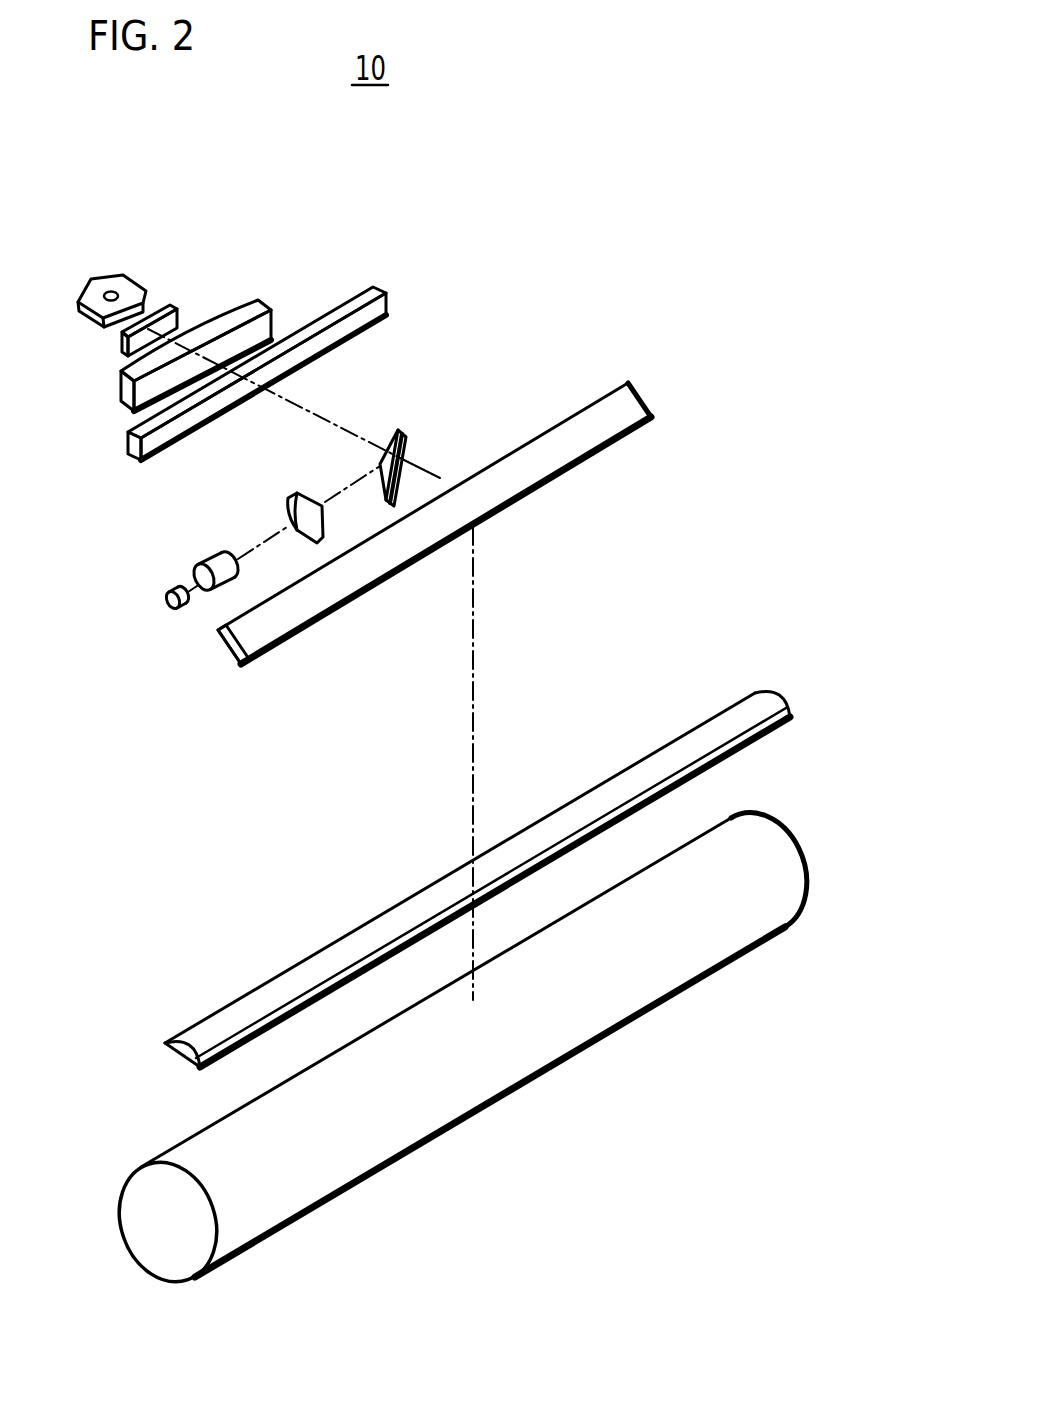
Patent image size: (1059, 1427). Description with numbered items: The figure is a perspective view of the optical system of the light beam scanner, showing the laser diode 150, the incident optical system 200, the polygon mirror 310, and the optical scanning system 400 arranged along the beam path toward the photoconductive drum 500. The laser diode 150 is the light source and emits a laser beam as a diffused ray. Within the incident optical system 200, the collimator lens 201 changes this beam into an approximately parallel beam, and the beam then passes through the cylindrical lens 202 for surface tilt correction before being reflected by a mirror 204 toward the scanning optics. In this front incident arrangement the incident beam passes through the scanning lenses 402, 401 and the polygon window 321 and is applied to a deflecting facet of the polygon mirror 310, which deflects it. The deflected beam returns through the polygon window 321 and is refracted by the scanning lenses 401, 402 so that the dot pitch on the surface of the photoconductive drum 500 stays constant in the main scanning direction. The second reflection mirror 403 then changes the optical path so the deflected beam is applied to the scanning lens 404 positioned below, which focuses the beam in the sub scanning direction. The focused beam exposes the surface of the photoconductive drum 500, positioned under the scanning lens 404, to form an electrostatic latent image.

The laser diode 150 is at (163, 598).
The incident optical system 200 is at (125, 652).
The collimator lens 201 is at (222, 575).
The cylindrical lens 202 is at (298, 522).
The mirror 204 is at (410, 452).
The polygon mirror 310 is at (103, 275).
The polygon window 321 is at (167, 300).
The optical scanning system 400 is at (726, 216).
The scanning lens 401 is at (262, 300).
The scanning lens 402 is at (387, 295).
The second reflection mirror 403 is at (643, 402).
The scanning lens 404 is at (232, 1003).
The photoconductive drum 500 is at (192, 1160).